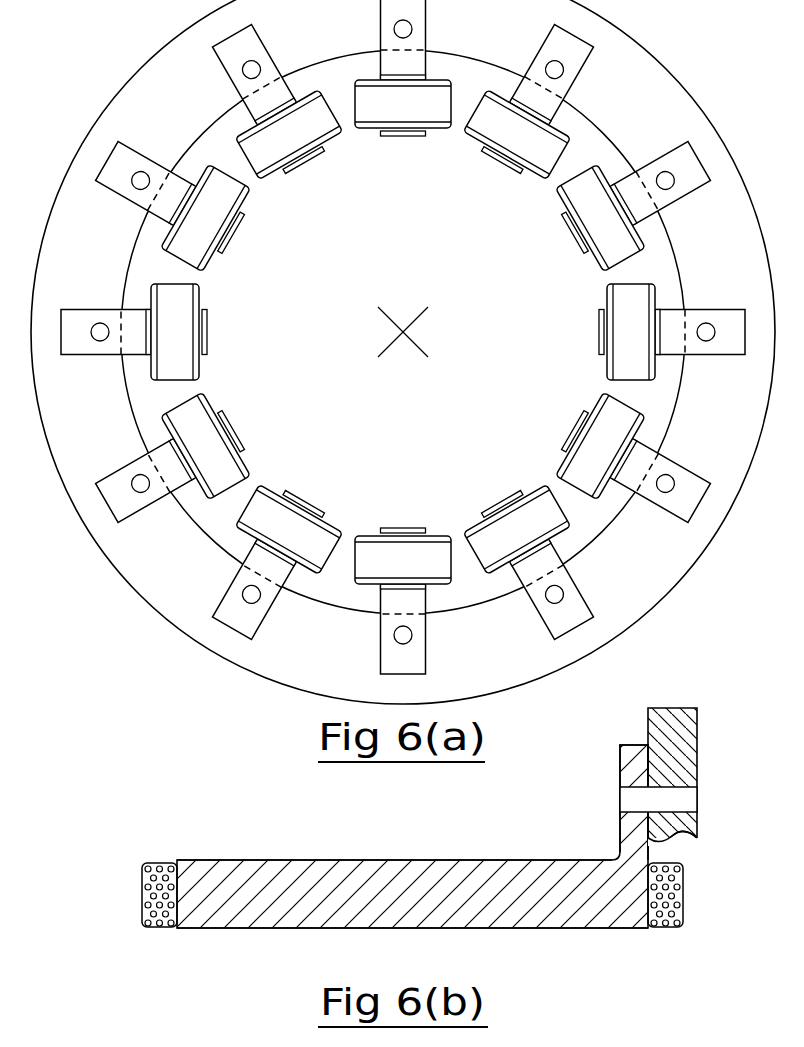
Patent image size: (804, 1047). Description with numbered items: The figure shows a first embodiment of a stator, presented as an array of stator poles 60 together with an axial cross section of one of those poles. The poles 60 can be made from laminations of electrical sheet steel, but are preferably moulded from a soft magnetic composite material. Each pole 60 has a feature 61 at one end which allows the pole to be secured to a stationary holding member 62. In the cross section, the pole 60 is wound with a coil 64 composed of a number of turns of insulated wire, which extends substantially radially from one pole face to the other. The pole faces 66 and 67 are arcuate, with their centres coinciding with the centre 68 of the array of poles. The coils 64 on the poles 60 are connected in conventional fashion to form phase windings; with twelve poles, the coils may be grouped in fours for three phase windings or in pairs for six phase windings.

In FIG. 6A, the stator pole 60 is at (408, 130).
In FIG. 6B, the stator pole 60 is at (528, 913).
In FIG. 6A, the feature 61 is at (572, 58).
In FIG. 6B, the feature 61 is at (618, 758).
In FIG. 6A, the stationary holding member 62 is at (627, 33).
In FIG. 6B, the stationary holding member 62 is at (667, 708).
In FIG. 6A, the coil 64 is at (178, 318).
In FIG. 6B, the coil 64 is at (142, 897).
In FIG. 6A, the pole face 66 is at (393, 75).
In FIG. 6B, the pole face 66 is at (345, 858).
In FIG. 6A, the pole face 67 is at (313, 150).
In FIG. 6B, the pole face 67 is at (246, 928).
In FIG. 6A, the centre of the array of poles 68 is at (405, 340).